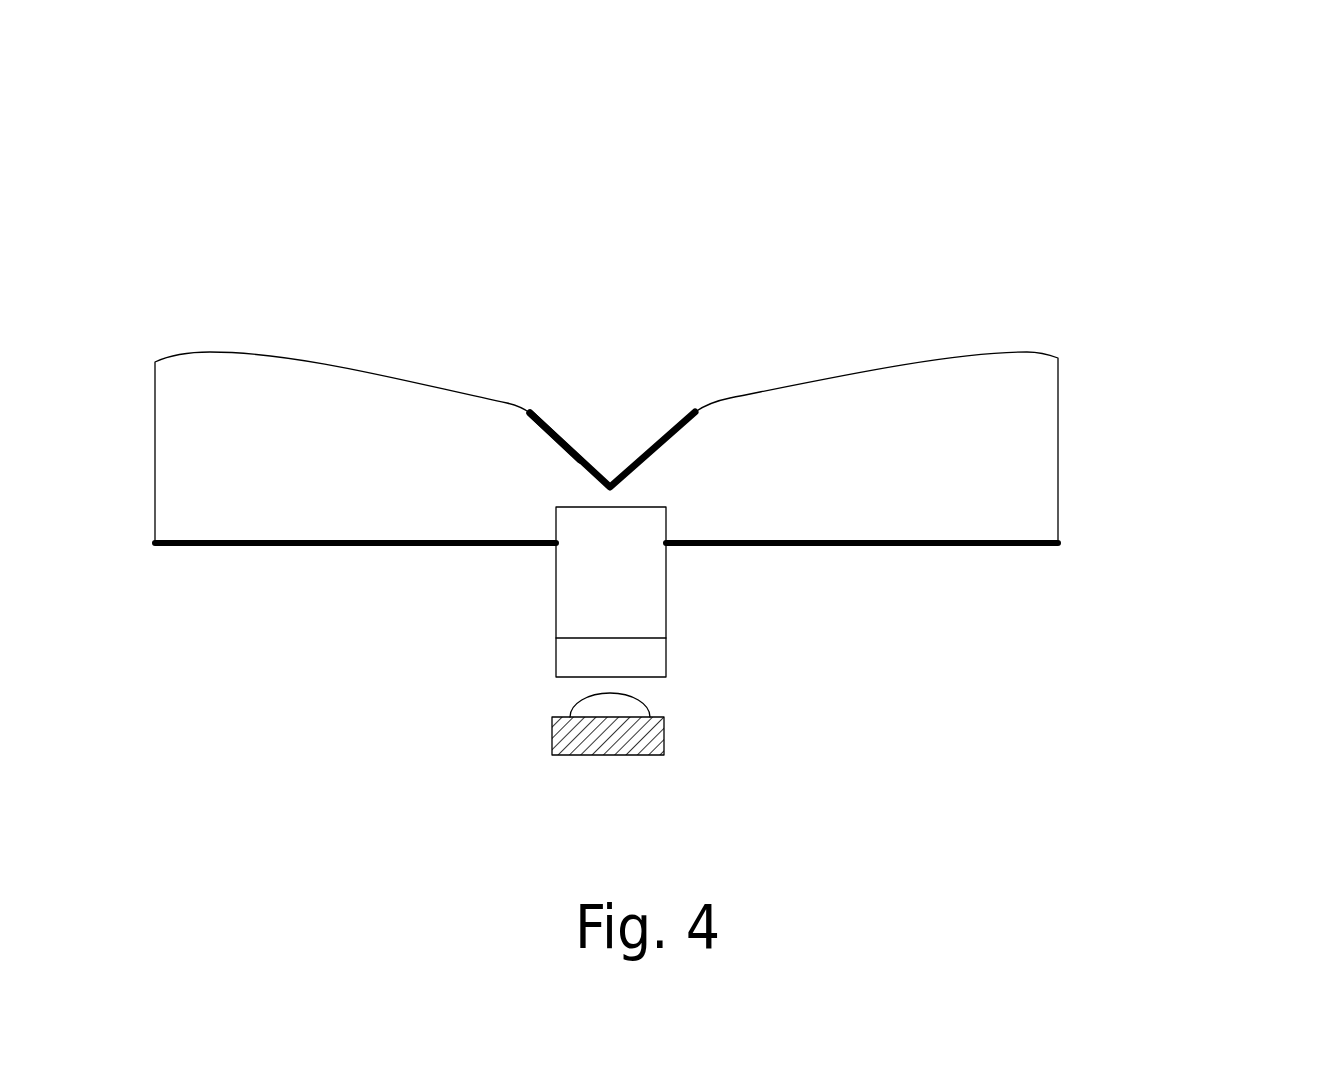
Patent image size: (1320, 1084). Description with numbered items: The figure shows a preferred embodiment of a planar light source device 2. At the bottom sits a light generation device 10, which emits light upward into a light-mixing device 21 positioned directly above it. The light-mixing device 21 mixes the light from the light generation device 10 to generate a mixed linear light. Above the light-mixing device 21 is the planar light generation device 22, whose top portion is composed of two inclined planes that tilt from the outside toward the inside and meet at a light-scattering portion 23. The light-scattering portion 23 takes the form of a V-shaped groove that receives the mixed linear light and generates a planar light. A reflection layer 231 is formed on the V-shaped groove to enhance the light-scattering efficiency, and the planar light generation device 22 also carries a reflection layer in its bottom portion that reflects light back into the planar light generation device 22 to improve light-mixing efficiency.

The planar light source device 2 is at (1162, 145).
The planar light generation device 22 is at (932, 382).
The light-scattering portion 23 is at (662, 447).
The reflection layer 231 is at (543, 427).
The light-mixing device 21 is at (587, 655).
The light generation device 10 is at (664, 742).